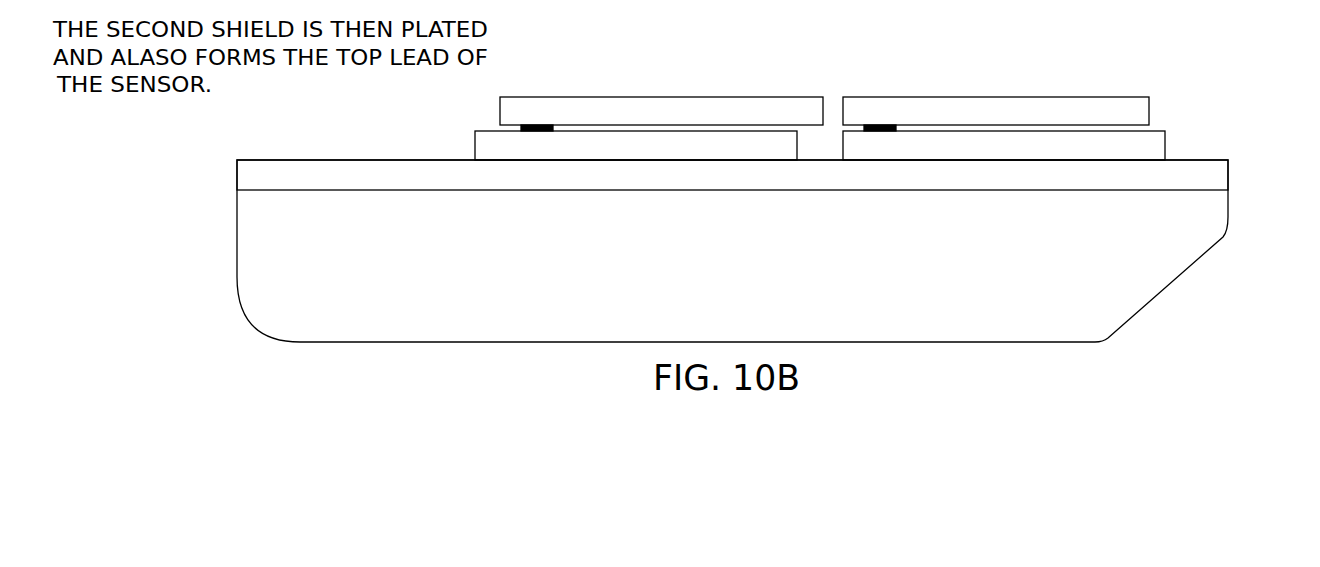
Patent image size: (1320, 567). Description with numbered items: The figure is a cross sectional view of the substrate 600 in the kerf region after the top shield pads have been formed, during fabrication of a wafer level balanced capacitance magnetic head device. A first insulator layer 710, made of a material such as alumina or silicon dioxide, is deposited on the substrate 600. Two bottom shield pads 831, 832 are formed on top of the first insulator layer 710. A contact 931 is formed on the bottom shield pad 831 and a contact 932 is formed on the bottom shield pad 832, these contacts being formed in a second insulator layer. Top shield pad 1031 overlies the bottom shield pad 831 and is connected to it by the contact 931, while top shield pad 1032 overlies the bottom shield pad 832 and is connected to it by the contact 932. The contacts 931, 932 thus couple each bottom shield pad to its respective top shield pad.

The substrate 600 is at (1208, 228).
The first insulator layer 710 is at (1215, 175).
The bottom shield pad 831 is at (487, 148).
The bottom shield pad 832 is at (1153, 140).
The contact 931 is at (512, 130).
The contact 932 is at (887, 123).
The top shield pad 1031 is at (623, 107).
The top shield pad 1032 is at (1052, 107).